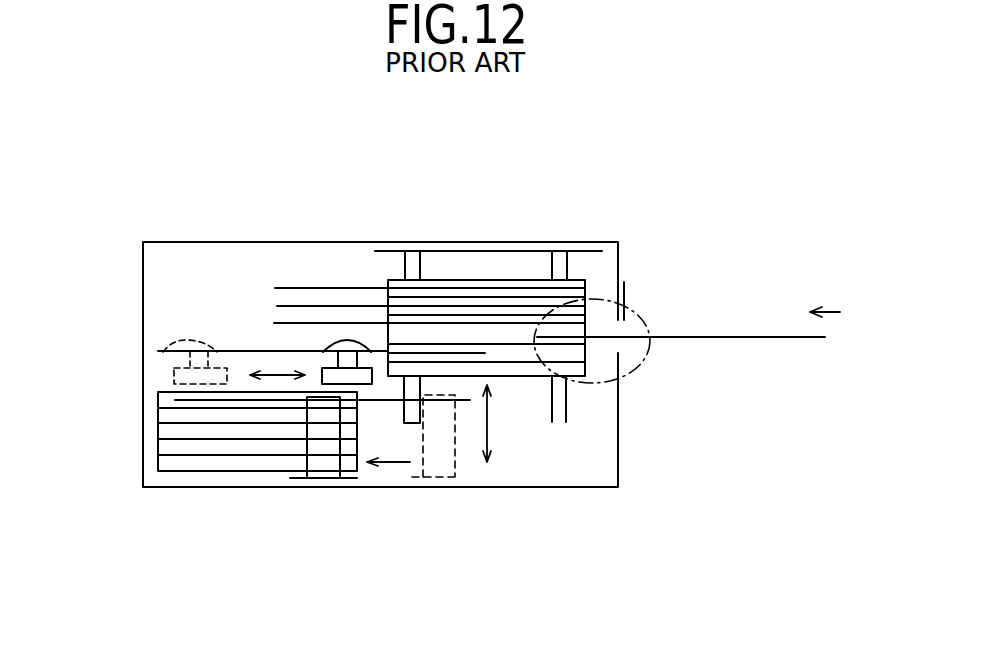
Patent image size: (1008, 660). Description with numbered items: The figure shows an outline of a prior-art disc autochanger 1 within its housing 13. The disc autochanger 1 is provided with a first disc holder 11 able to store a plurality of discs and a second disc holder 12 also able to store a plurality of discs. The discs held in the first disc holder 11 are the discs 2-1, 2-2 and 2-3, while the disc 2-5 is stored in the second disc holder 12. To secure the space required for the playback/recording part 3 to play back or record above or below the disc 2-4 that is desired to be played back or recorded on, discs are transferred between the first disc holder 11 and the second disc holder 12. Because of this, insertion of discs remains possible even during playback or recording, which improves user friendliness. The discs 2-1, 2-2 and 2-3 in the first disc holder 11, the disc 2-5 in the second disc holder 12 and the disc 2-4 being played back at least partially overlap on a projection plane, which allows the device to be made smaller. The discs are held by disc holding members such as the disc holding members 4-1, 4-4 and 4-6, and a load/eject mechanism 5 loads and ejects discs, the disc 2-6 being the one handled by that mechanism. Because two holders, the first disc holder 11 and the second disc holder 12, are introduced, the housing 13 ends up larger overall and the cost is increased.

The disc autochanger 1 is at (593, 178).
The first disc holder 11 is at (382, 275).
The housing 13 is at (398, 250).
The disc holding member 4-4 is at (480, 340).
The disc holding member 4-1 is at (586, 292).
The disc 2-1 is at (288, 287).
The disc 2-2 is at (277, 305).
The disc 2-3 is at (275, 323).
The disc being played back 2-4 is at (248, 350).
The disc 2-5 is at (378, 404).
The disc 2-6 is at (797, 344).
The playback/recording part 3 is at (162, 341).
The load/eject mechanism 5 is at (645, 310).
The second disc holder 12 is at (158, 392).
The disc holding member 4-6 is at (607, 383).